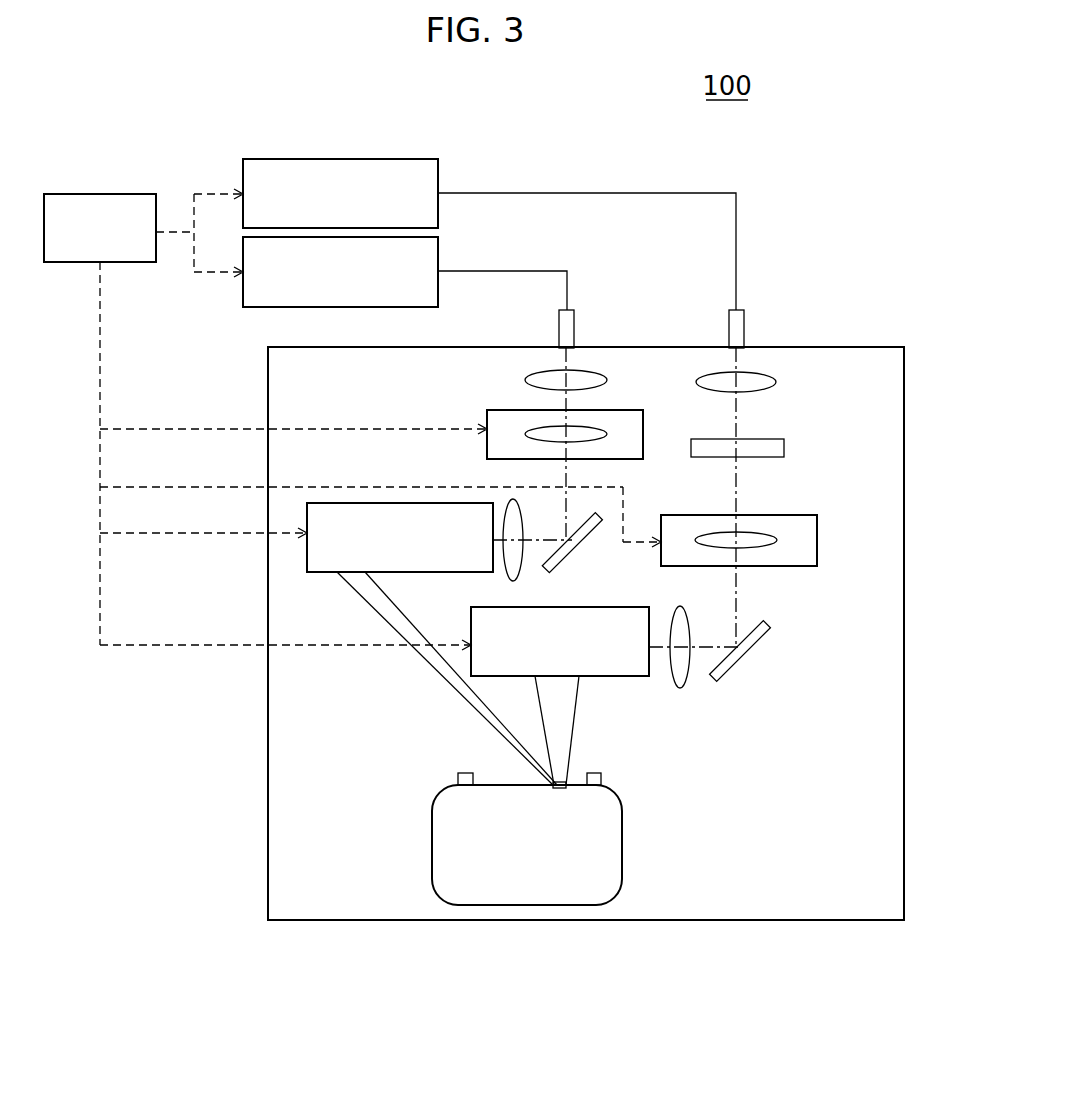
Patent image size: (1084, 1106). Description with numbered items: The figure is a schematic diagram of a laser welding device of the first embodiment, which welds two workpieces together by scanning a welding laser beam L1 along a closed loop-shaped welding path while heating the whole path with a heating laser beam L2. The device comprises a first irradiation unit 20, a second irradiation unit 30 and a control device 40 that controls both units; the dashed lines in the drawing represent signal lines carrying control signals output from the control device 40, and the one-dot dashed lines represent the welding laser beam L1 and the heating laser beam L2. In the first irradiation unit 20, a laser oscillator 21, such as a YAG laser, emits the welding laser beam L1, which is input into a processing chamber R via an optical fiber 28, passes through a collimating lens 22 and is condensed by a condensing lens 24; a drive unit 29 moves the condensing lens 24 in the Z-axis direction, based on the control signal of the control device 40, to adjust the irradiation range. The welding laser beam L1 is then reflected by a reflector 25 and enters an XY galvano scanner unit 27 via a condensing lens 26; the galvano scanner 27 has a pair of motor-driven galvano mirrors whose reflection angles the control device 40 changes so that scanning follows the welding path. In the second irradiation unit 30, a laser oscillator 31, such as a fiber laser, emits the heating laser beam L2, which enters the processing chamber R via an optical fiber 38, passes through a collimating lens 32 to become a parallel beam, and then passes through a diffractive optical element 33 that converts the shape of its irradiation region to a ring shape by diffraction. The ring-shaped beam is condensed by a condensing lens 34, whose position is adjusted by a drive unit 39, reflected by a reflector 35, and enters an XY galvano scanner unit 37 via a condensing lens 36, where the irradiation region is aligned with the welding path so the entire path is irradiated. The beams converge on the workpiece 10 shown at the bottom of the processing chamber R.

The workpiece 10 is at (527, 893).
The first irradiation unit 20 is at (410, 420).
The laser oscillator 21 is at (248, 302).
The collimating lens 22 is at (584, 378).
The condensing lens 24 is at (545, 432).
The reflector 25 is at (590, 537).
The condensing lens 26 is at (512, 572).
The XY galvano scanner unit 27 is at (333, 564).
The optical fiber 28 is at (573, 318).
The drive unit 29 is at (634, 437).
The second irradiation unit 30 is at (836, 454).
The laser oscillator 31 is at (253, 166).
The collimating lens 32 is at (754, 380).
The diffractive optical element 33 is at (770, 450).
The condensing lens 34 is at (772, 540).
The reflector 35 is at (740, 656).
The condensing lens 36 is at (684, 686).
The XY galvano scanner unit 37 is at (604, 678).
The optical fiber 38 is at (744, 318).
The drive unit 39 is at (808, 546).
The control device 40 is at (67, 194).
The welding laser beam L1 is at (566, 465).
The heating laser beam L2 is at (738, 592).
The processing chamber R is at (904, 655).